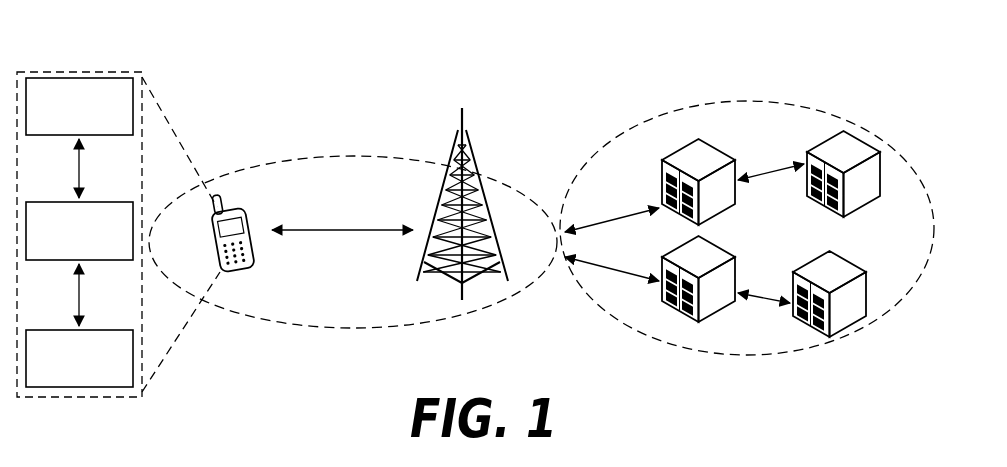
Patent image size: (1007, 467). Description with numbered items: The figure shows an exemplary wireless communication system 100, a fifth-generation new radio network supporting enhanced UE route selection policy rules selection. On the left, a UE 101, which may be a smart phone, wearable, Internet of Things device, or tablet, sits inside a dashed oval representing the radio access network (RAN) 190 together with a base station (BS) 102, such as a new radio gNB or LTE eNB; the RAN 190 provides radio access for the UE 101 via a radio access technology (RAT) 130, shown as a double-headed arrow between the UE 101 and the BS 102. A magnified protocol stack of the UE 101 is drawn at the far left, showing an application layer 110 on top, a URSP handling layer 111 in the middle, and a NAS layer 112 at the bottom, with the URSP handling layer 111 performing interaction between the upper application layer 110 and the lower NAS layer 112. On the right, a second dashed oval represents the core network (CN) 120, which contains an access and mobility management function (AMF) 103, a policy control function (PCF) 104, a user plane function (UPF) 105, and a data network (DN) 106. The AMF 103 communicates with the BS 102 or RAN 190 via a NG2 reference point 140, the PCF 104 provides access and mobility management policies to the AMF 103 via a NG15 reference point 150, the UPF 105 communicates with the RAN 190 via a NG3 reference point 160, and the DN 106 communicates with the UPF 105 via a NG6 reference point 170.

The wireless communication system 100 is at (520, 31).
The user equipment (UE) 101 is at (238, 272).
The base station (BS) 102 is at (462, 128).
The access and mobility management function (AMF) 103 is at (693, 141).
The policy control function (PCF) 104 is at (841, 133).
The user plane function (UPF) 105 is at (698, 323).
The data network (DN) 106 is at (830, 338).
The application layer 110 is at (79, 106).
The URSP handling layer 111 is at (79, 231).
The NAS layer 112 is at (79, 358).
The core network (CN) 120 is at (615, 147).
The radio access technology (RAT) 130 is at (342, 206).
The NG2 reference point 140 is at (612, 200).
The NG15 reference point 150 is at (771, 150).
The NG3 reference point 160 is at (612, 252).
The NG6 reference point 170 is at (764, 277).
The radio access network (RAN) 190 is at (328, 157).